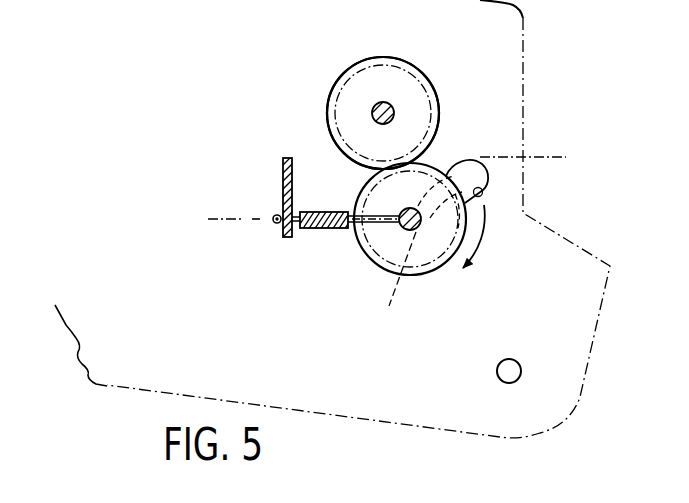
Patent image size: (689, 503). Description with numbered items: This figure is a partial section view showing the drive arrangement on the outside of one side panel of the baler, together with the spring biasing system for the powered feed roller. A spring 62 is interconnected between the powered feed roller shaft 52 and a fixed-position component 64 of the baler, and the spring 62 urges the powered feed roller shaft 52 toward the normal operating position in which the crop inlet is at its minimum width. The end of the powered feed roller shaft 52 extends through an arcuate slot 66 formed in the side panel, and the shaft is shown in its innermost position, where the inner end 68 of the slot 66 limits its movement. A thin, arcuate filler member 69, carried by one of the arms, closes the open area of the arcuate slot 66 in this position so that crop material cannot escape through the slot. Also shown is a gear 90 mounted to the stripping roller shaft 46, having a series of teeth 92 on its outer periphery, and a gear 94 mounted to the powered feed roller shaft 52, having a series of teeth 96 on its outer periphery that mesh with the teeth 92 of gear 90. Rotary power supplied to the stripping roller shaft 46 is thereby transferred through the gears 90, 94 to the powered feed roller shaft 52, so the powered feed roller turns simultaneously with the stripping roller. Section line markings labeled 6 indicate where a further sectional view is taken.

The section line 6- 6 is at (215, 217).
The stripping roller shaft 46 is at (377, 104).
The powered feed roller shaft 52 is at (418, 230).
The spring 62 is at (326, 212).
The fixed-position component 64 is at (284, 165).
The arcuate slot 66 is at (484, 188).
The inner end of slot 68 is at (387, 278).
The filler member 69 is at (481, 177).
The gear 90 is at (347, 68).
The teeth 92 is at (457, 113).
The gear 94 is at (447, 269).
The teeth 96 is at (481, 222).